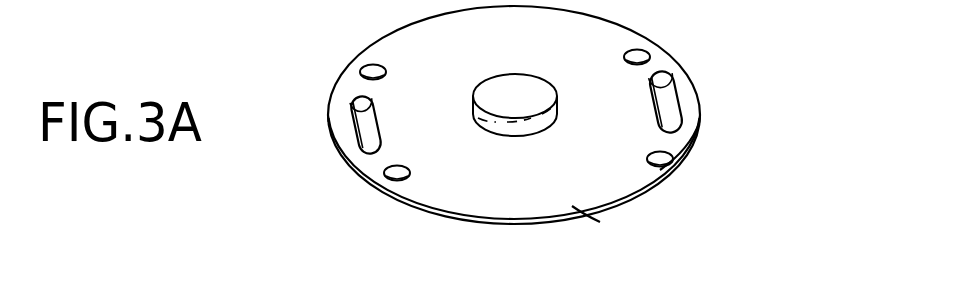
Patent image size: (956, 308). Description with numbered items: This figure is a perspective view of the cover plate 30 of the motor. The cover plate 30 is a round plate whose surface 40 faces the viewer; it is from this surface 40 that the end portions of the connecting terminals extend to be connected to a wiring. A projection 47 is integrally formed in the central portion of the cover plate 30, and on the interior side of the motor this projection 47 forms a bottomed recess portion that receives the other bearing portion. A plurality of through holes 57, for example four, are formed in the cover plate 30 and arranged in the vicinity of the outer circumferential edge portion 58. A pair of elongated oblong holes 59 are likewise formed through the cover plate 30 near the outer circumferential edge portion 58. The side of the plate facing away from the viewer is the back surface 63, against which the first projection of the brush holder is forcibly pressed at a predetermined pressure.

The cover plate 30 is at (587, 147).
The surface 40 is at (534, 187).
The projection 47 is at (530, 73).
The through holes 57 is at (386, 70).
The outer circumferential edge portion 58 is at (672, 172).
The elongated oblong holes 59 is at (376, 122).
The back surface 63 is at (575, 206).